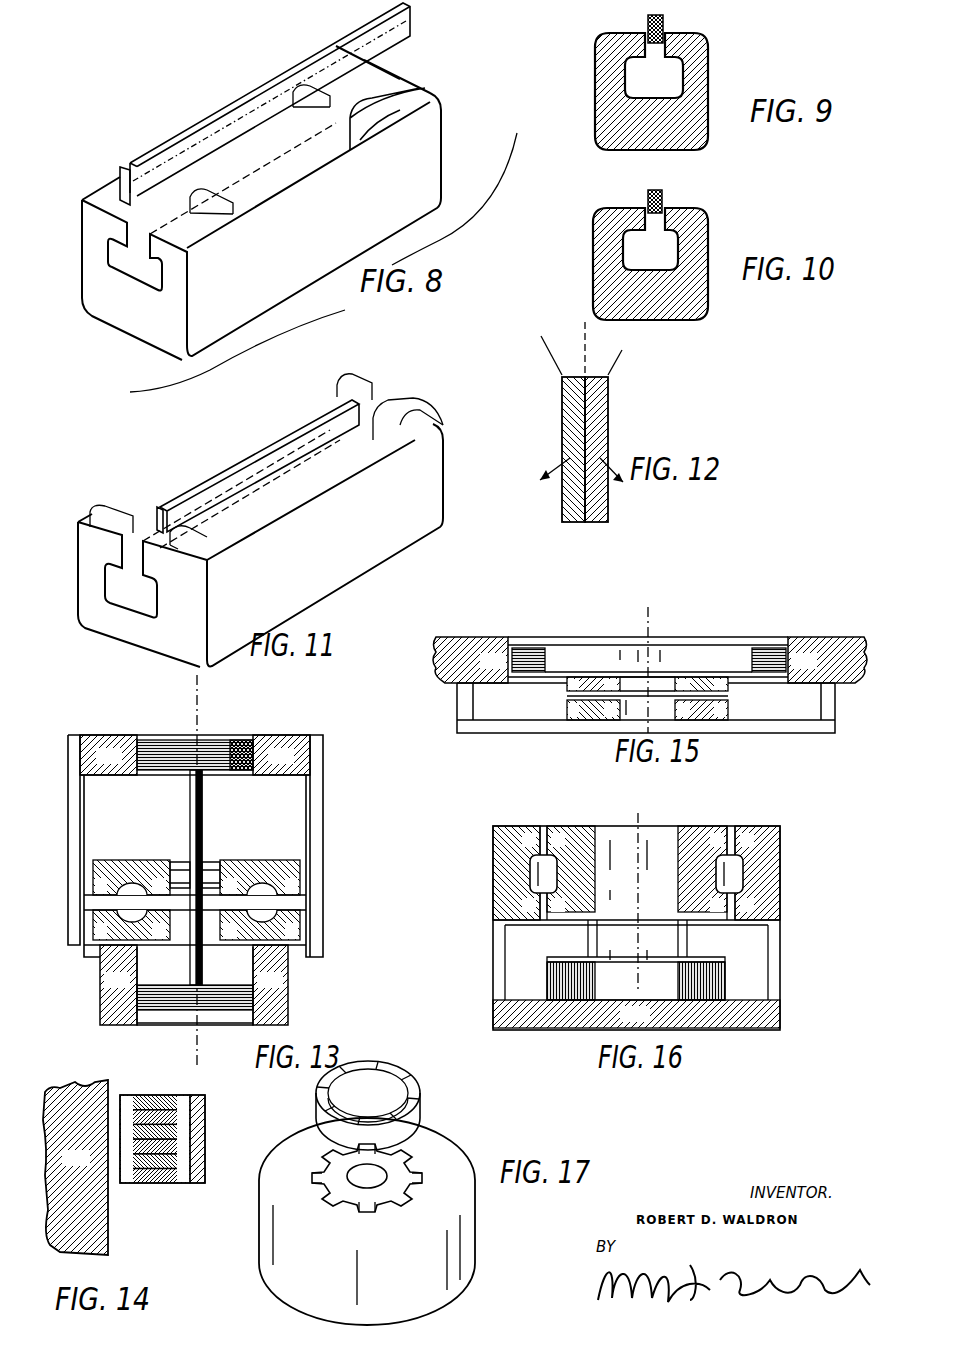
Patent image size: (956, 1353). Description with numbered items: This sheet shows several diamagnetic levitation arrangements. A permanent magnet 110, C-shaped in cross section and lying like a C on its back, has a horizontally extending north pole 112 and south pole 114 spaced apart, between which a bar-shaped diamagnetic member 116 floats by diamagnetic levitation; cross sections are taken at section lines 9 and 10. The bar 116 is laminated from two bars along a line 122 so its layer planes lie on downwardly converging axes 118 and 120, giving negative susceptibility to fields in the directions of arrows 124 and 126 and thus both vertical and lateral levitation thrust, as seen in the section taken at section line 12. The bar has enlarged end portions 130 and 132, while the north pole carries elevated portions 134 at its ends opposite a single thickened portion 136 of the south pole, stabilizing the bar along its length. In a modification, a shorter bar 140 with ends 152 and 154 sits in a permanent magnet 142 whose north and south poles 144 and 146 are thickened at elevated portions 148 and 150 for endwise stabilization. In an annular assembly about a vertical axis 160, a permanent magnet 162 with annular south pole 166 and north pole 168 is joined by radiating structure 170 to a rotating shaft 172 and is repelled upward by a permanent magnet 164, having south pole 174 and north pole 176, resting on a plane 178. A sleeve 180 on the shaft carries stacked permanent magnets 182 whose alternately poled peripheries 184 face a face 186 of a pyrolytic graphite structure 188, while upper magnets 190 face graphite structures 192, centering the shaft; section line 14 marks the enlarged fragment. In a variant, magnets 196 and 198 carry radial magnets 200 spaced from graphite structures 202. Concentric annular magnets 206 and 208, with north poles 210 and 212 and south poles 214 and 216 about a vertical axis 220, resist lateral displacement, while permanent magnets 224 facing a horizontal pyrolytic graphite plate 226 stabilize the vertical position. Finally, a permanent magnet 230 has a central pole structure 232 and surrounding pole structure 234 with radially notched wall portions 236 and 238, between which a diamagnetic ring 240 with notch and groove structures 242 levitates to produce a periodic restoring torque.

In FIG. 8, the permanent magnet 110 is at (100, 297).
In FIG. 9, the permanent magnet 110 is at (610, 128).
In FIG. 10, the permanent magnet 110 is at (607, 293).
In FIG. 8, the north pole 112 is at (97, 220).
In FIG. 9, the north pole 112 is at (598, 60).
In FIG. 10, the north pole 112 is at (607, 217).
In FIG. 8, the south pole 114 is at (167, 260).
In FIG. 9, the south pole 114 is at (703, 65).
In FIG. 10, the south pole 114 is at (703, 222).
In FIG. 8, the diamagnetic member 116 is at (233, 100).
In FIG. 9, the diamagnetic member 116 is at (665, 15).
In FIG. 10, the diamagnetic member 116 is at (657, 192).
In FIG. 12, the diamagnetic member 116 is at (568, 417).
In FIG. 12, the downwardly converging axis 118 is at (552, 362).
In FIG. 12, the downwardly converging axis 120 is at (626, 352).
In FIG. 12, the lamination line 122 is at (587, 362).
In FIG. 12, the arrow 124 is at (557, 453).
In FIG. 12, the arrow 126 is at (620, 453).
In FIG. 8, the enlarged end portion 130 is at (135, 182).
In FIG. 8, the enlarged end portion 132 is at (403, 18).
In FIG. 9, the enlarged end portion 132 is at (683, 53).
In FIG. 8, the elevated portion 134 is at (367, 82).
In FIG. 9, the elevated portion 134 is at (620, 33).
In FIG. 8, the elevated portion 136 is at (430, 92).
In FIG. 10, the elevated portion 136 is at (680, 207).
In FIG. 11, the bar 140 is at (267, 447).
In FIG. 11, the permanent magnet 142 is at (123, 630).
In FIG. 11, the north pole 144 is at (80, 522).
In FIG. 11, the south pole 146 is at (167, 580).
In FIG. 11, the elevated portion 148 is at (382, 388).
In FIG. 11, the elevated portion 150 is at (405, 415).
In FIG. 11, the end of bar 152 is at (163, 500).
In FIG. 11, the end of bar 154 is at (373, 383).
In FIG. 13, the vertical axis 160 is at (200, 702).
In FIG. 13, the permanent magnet 162 is at (283, 862).
In FIG. 13, the permanent magnet 164 is at (303, 917).
In FIG. 13, the annular south pole 166 is at (103, 887).
In FIG. 13, the annular north pole 168 is at (152, 880).
In FIG. 13, the radiating structure 170 is at (215, 867).
In FIG. 13, the rotating shaft 172 is at (187, 742).
In FIG. 13, the annular south pole 174 is at (103, 918).
In FIG. 13, the annular north pole 176 is at (100, 950).
In FIG. 13, the plane 178 is at (300, 950).
In FIG. 14, the sleeve 180 is at (205, 1177).
In FIG. 14, the permanent magnets 182 is at (150, 1093).
In FIG. 13, the peripheries 184 is at (117, 1017).
In FIG. 14, the peripheries 184 is at (115, 1150).
In FIG. 14, the face 186 is at (97, 1080).
In FIG. 13, the pyrolytic graphite structure 188 is at (100, 990).
In FIG. 14, the pyrolytic graphite structure 188 is at (63, 1250).
In FIG. 13, the permanent magnets 190 is at (242, 742).
In FIG. 13, the pyrolytic graphite structures 192 is at (130, 740).
In FIG. 15, the permanent magnet 196 is at (600, 678).
In FIG. 15, the permanent magnet 198 is at (627, 707).
In FIG. 15, the permanent magnets 200 is at (532, 647).
In FIG. 15, the pyrolytic graphite structures 202 is at (492, 637).
In FIG. 16, the annular permanent magnet 206 is at (507, 865).
In FIG. 16, the annular permanent magnet 208 is at (597, 837).
In FIG. 16, the north pole 210 is at (535, 827).
In FIG. 16, the north pole 212 is at (550, 827).
In FIG. 16, the south pole 214 is at (517, 912).
In FIG. 16, the south pole 216 is at (548, 917).
In FIG. 16, the vertical axis 220 is at (643, 815).
In FIG. 16, the permanent magnets 224 is at (517, 1028).
In FIG. 16, the pyrolytic graphite plate 226 is at (500, 1008).
In FIG. 17, the permanent magnet 230 is at (433, 1283).
In FIG. 17, the central pole structure 232 is at (380, 1197).
In FIG. 17, the surrounding pole structure 234 is at (480, 1200).
In FIG. 17, the annular wall portion 236 is at (407, 1147).
In FIG. 17, the annular upstanding wall portion 238 is at (315, 1197).
In FIG. 17, the diamagnetic ring 240 is at (380, 1066).
In FIG. 17, the notch and groove structures 242 is at (388, 1140).
In FIG. 8, the section line 9- 9 is at (293, 50).
In FIG. 8, the section line 10- 10 is at (193, 110).
In FIG. 11, the section line 12- 12 is at (223, 407).
In FIG. 13, the section line 14- 14 is at (182, 960).